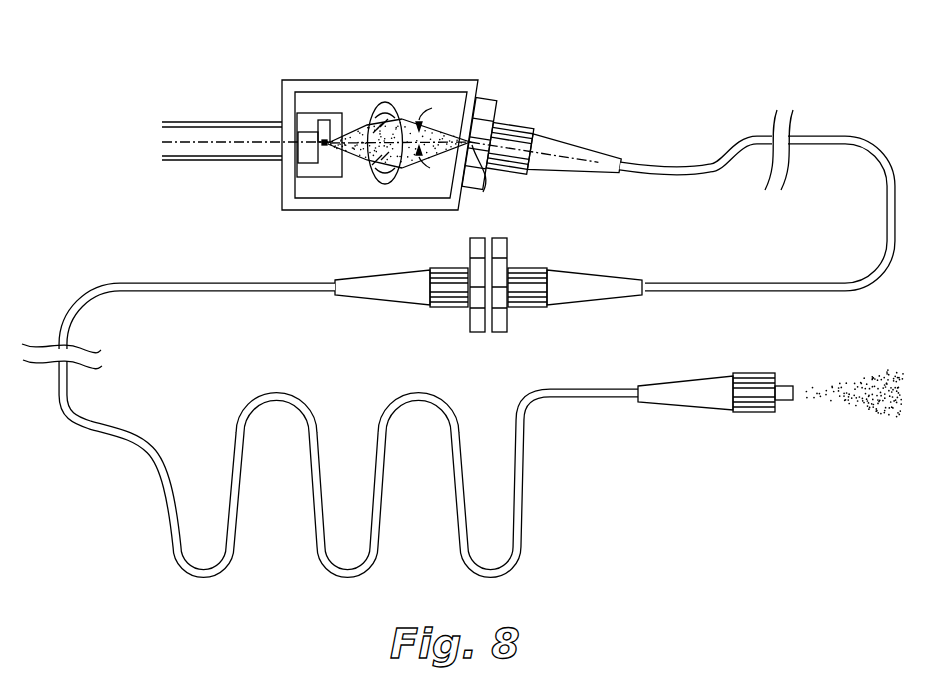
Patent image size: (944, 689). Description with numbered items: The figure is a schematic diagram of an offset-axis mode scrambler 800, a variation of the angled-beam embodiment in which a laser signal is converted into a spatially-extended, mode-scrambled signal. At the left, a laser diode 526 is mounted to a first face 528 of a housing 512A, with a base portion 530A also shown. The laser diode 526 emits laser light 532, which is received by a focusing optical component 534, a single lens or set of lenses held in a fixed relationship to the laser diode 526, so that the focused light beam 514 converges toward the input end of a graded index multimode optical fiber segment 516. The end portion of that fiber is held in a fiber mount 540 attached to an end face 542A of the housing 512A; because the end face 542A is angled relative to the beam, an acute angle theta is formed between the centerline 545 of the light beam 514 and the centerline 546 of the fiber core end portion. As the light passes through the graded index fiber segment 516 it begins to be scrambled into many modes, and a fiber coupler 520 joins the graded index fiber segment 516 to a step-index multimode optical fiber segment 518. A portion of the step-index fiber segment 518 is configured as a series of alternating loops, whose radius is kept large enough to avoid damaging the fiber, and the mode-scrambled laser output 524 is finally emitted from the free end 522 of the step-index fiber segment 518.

The housing 512A is at (392, 60).
The light beam 514 is at (405, 108).
The GI multimode optical fiber segment 516 is at (710, 165).
The SI multimode optical fiber segment 518 is at (222, 284).
The fiber coupler 520 is at (555, 336).
The free end 522 is at (754, 404).
The mode-scrambled laser output 524 is at (852, 395).
The laser diode 526 is at (313, 152).
The first face 528 is at (282, 115).
The base 530A is at (312, 207).
The laser light 532 is at (350, 132).
The focusing optical component 534 is at (390, 182).
The fiber mount 540 is at (482, 127).
The end face 542A is at (470, 104).
The centerline 545 is at (323, 122).
The centerline 546 is at (553, 157).
The offset-axis mode scrambler 800 is at (262, 578).